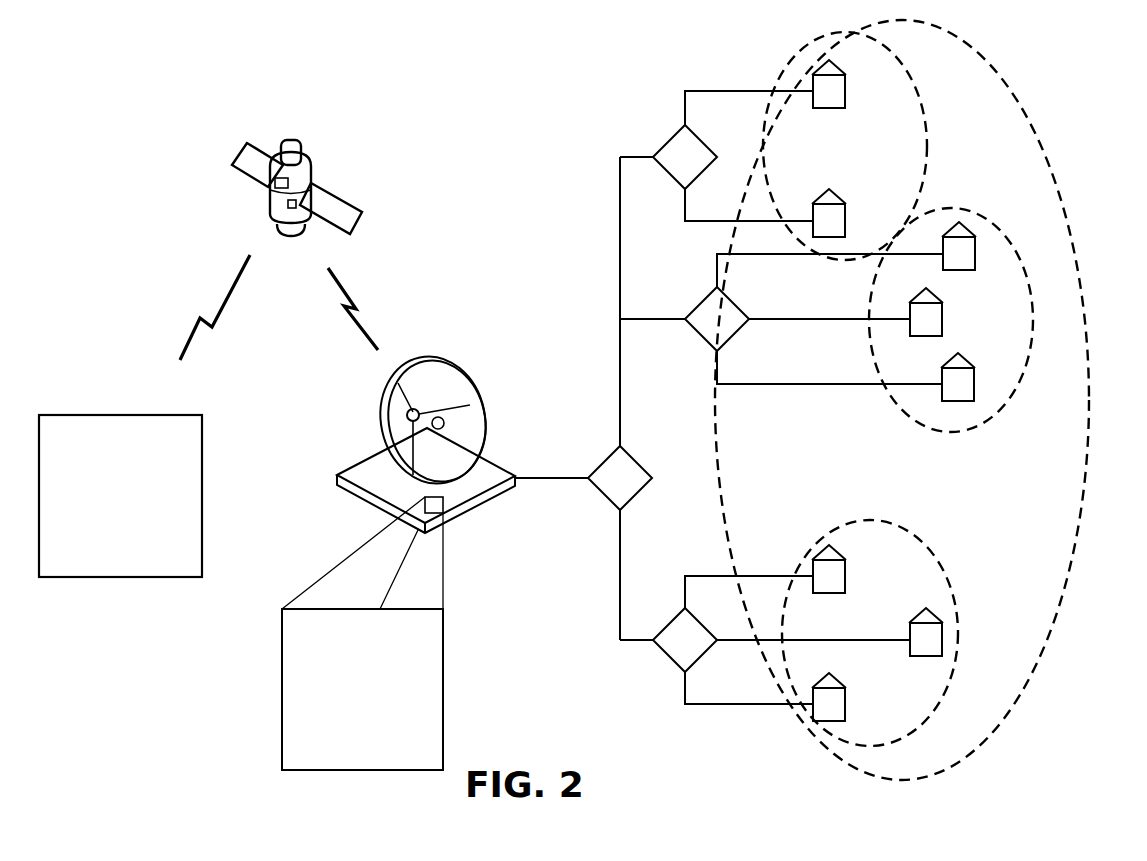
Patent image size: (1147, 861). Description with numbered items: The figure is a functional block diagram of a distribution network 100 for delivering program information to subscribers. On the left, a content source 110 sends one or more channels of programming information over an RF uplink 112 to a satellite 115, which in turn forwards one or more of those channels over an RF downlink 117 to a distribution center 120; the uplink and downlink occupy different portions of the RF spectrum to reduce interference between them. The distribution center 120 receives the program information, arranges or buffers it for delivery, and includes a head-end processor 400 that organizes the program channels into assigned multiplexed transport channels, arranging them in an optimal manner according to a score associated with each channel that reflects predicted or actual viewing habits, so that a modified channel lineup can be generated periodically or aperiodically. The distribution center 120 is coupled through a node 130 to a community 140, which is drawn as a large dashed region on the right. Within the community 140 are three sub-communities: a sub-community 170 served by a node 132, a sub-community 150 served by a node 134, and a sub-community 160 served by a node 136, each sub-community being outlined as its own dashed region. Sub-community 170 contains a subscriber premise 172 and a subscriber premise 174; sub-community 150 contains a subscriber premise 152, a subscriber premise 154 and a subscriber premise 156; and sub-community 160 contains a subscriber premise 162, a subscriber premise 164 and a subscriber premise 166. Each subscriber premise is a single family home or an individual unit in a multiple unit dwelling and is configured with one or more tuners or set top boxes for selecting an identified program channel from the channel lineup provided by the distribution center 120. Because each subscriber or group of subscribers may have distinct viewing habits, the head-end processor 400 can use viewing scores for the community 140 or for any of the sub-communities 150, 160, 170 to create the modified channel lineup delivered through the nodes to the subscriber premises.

The distribution network 100 is at (472, 148).
The content source 110 is at (176, 414).
The RF uplink 112 is at (228, 280).
The satellite 115 is at (313, 160).
The RF downlink 117 is at (358, 300).
The distribution center 120 is at (477, 472).
The head-end processor 400 is at (443, 665).
The node 130 is at (628, 470).
The node 132 is at (693, 156).
The node 134 is at (709, 301).
The node 136 is at (667, 643).
The community 140 is at (1074, 496).
The sub-community 150 is at (962, 212).
The subscriber premise 152 is at (968, 252).
The subscriber premise 154 is at (932, 316).
The subscriber premise 156 is at (950, 376).
The sub-community 160 is at (920, 576).
The subscriber premise 162 is at (838, 572).
The subscriber premise 164 is at (935, 637).
The subscriber premise 166 is at (838, 703).
The sub-community 170 is at (910, 137).
The subscriber premise 172 is at (833, 82).
The subscriber premise 174 is at (832, 210).